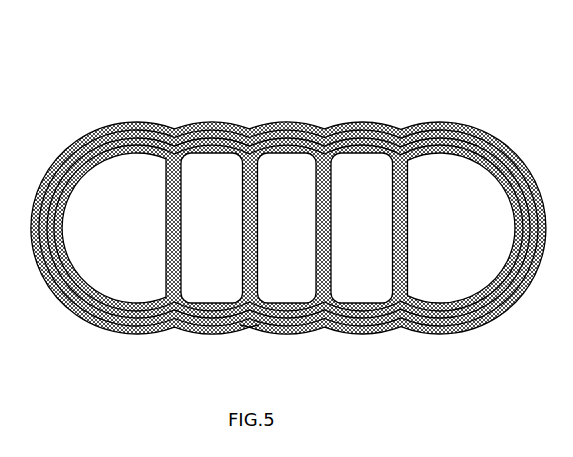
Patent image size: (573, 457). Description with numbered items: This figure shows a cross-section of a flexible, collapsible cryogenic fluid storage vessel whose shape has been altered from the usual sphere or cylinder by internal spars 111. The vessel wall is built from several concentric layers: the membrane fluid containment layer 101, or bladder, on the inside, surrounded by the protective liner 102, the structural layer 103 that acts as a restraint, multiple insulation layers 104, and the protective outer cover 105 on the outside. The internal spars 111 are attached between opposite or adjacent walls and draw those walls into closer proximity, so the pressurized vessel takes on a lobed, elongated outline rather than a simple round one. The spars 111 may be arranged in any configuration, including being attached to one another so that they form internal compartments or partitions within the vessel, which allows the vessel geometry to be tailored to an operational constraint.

The membrane fluid containment layer 101 is at (476, 157).
The protective liner 102 is at (433, 144).
The structural layer 103 is at (383, 137).
The insulation layers 104 is at (325, 133).
The protective outer cover 105 is at (275, 118).
The internal spars 111 is at (268, 348).